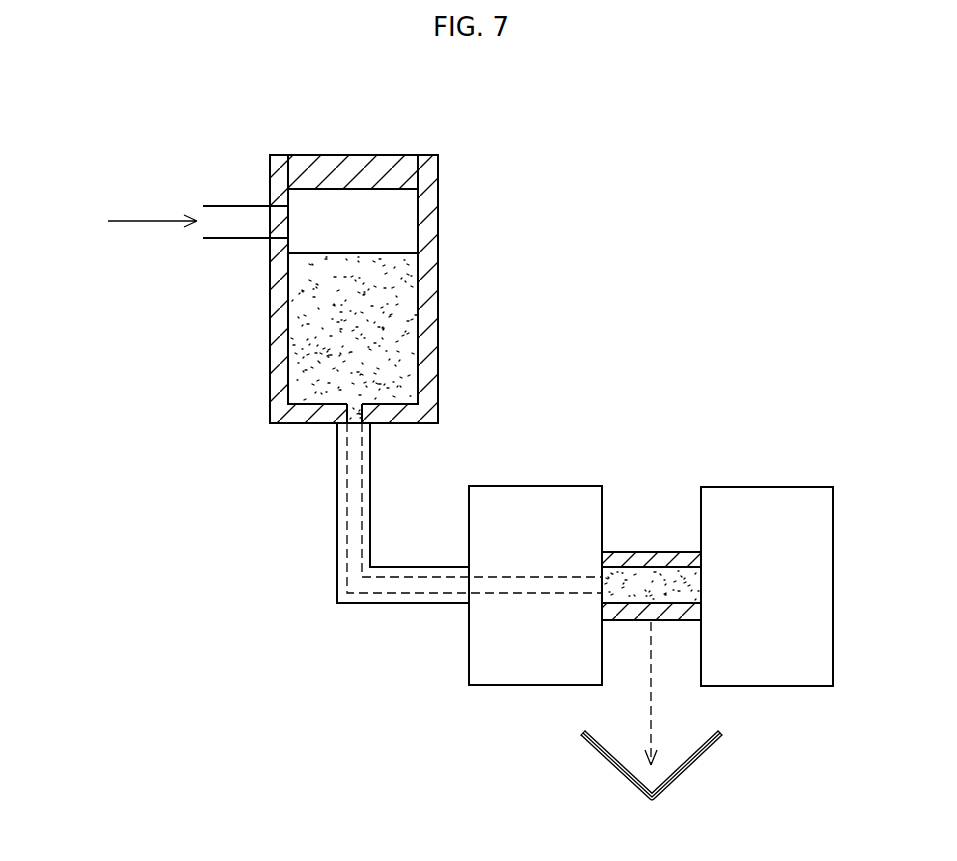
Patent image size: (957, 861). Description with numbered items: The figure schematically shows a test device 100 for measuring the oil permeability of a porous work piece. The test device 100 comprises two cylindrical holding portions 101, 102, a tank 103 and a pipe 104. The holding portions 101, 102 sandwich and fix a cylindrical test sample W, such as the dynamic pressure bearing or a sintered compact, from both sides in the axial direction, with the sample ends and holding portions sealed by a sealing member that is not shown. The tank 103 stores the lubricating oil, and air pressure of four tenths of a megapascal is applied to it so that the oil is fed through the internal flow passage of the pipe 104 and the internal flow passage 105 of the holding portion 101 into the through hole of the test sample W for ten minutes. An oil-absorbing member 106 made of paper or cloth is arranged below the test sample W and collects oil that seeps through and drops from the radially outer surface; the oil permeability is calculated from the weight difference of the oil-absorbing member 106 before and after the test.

The test device 100 is at (607, 279).
The holding portion 101 is at (534, 503).
The holding portion 102 is at (766, 503).
The tank 103 is at (438, 221).
The pipe 104 is at (336, 541).
The internal flow passage 105 is at (538, 593).
The oil-absorbing member 106 is at (690, 770).
The test sample W is at (650, 541).